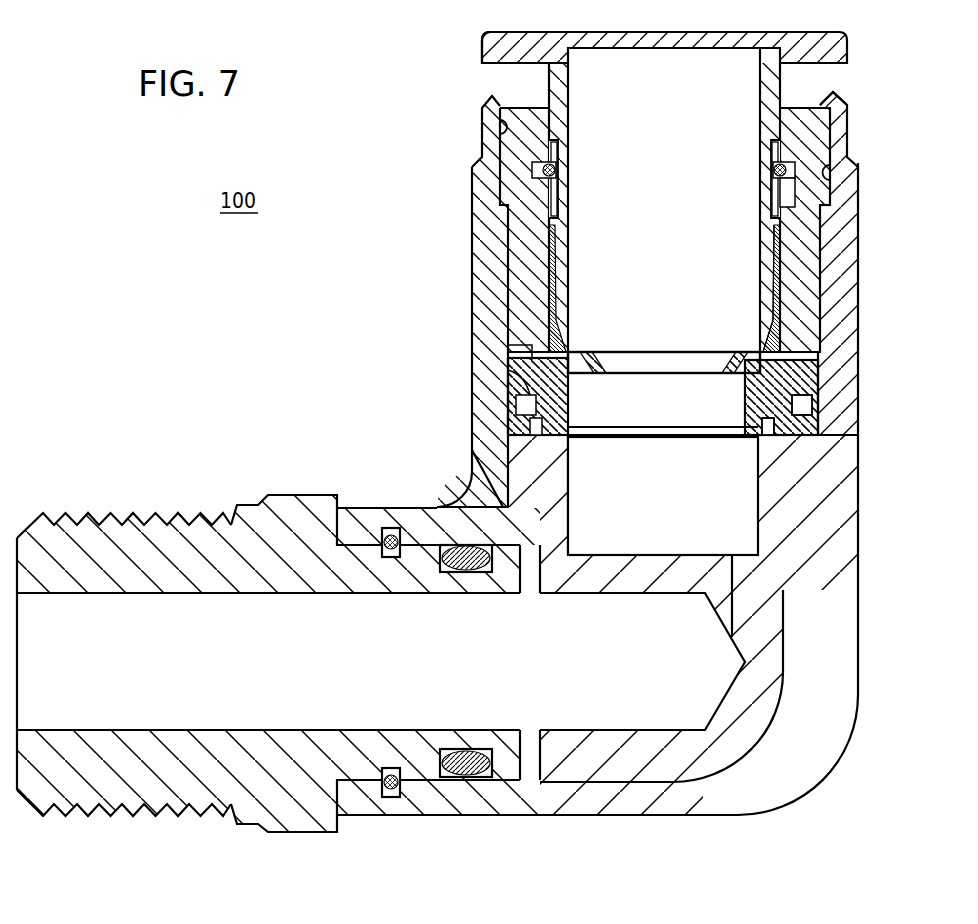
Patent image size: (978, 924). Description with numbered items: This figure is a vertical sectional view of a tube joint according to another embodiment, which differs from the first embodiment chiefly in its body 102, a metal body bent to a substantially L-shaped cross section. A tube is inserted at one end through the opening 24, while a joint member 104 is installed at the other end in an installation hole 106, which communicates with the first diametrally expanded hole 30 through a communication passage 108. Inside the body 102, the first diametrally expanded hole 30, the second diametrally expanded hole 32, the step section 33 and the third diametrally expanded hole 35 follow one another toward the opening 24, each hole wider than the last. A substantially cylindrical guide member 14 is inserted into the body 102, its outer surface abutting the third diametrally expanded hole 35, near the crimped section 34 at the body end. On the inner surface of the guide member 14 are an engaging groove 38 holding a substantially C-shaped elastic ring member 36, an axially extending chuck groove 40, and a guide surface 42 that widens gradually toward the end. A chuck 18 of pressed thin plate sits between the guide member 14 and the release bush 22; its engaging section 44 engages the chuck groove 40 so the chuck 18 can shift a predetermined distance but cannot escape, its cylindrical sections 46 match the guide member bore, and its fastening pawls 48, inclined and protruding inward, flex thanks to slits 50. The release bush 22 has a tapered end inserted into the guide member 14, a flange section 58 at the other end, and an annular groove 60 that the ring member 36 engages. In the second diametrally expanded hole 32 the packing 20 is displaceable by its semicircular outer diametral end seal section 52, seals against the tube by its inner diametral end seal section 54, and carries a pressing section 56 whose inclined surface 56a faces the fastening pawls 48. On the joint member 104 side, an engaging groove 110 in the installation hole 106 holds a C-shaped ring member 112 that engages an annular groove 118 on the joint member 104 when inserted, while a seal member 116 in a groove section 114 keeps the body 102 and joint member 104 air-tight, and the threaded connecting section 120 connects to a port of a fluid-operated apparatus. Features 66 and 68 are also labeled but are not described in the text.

The guide member 14 is at (832, 152).
The chuck 18 is at (788, 326).
The packing 20 is at (818, 386).
The release bush 22 is at (850, 42).
The opening 24 is at (498, 127).
The first diametrally expanded hole 30 is at (735, 596).
The second diametrally expanded hole 32 is at (760, 500).
The step section 33 is at (836, 205).
The crimped section 34 is at (840, 102).
The third diametrally expanded hole 35 is at (832, 177).
The ring member 36 is at (775, 172).
The engaging groove 38 is at (532, 172).
The chuck groove 40 is at (505, 235).
The guide surface 42 is at (522, 366).
The engaging section 44 is at (775, 240).
The cylindrical sections 46 is at (790, 265).
The fastening pawls 48 is at (598, 378).
The slits 50 is at (588, 353).
The outer diametral end seal section 52 is at (823, 412).
The inner diametral end seal section 54 is at (742, 437).
The pressing section 56 is at (822, 362).
The inclined surface 56a is at (574, 437).
The flange section 58 is at (482, 47).
The annular groove 60 is at (558, 160).
The flange 66 is at (515, 455).
The recess 68 is at (520, 393).
The body 102 is at (474, 291).
The joint member 104 is at (292, 494).
The installation hole 106 is at (426, 770).
The communication passage 108 is at (656, 716).
The engaging groove 110 is at (391, 797).
The ring member 112 is at (391, 528).
The groove section 114 is at (466, 574).
The seal member 116 is at (466, 750).
The annular groove 118 is at (394, 560).
The connecting section 120 is at (152, 814).